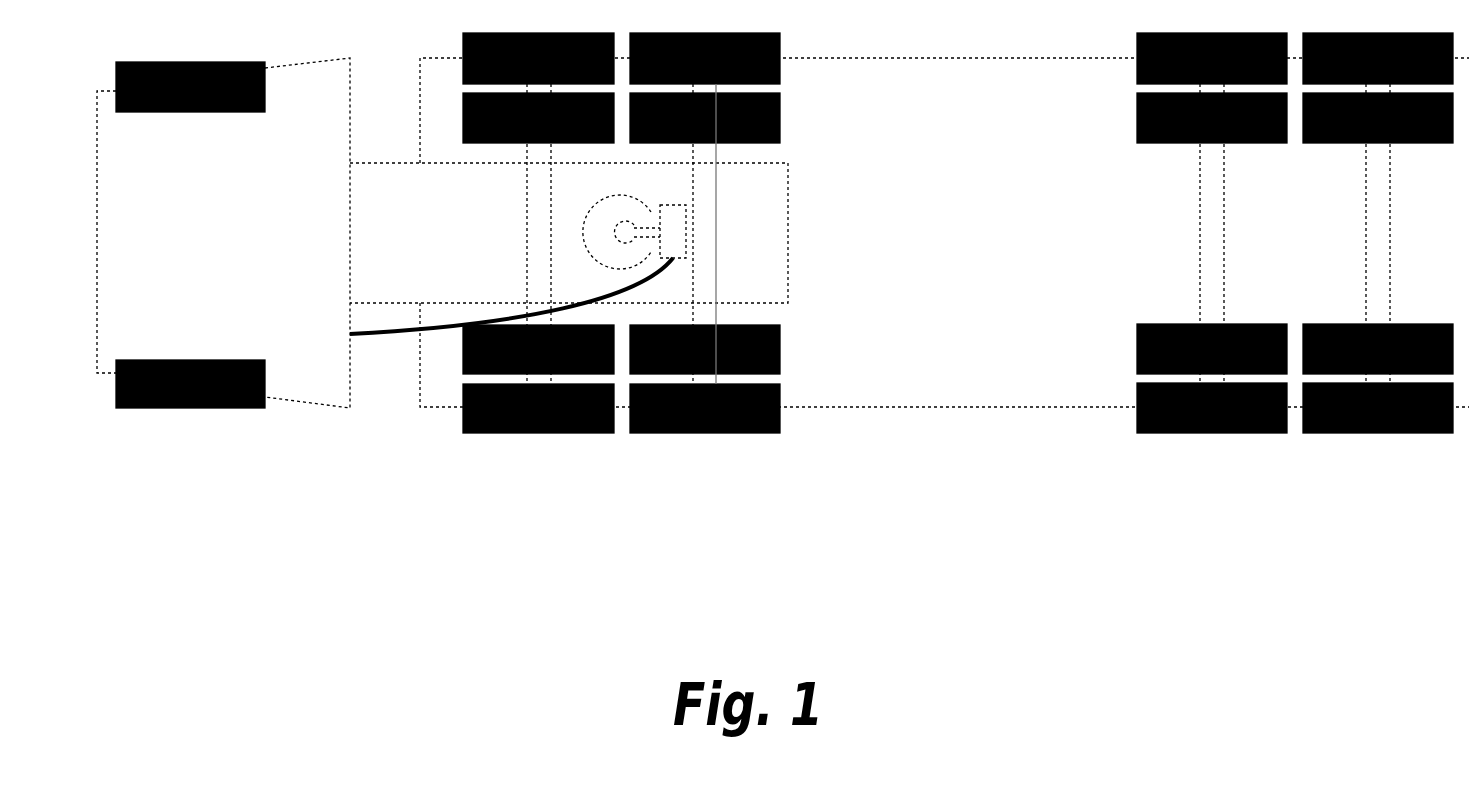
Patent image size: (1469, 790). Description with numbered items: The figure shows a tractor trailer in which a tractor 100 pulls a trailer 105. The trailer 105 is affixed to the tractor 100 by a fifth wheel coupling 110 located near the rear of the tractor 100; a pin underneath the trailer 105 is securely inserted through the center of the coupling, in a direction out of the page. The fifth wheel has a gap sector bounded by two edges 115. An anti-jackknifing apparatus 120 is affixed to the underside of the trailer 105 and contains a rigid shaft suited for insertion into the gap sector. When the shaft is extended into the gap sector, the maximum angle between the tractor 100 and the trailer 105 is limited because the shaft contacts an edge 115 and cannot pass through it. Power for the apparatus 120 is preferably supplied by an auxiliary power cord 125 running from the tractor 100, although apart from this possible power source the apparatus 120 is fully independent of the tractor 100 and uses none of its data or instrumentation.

The tractor 100 is at (442, 233).
The trailer 105 is at (944, 233).
The fifth wheel coupling 110 is at (602, 232).
The edges of the gap sector 115 is at (643, 218).
The anti-jackknifing apparatus 120 is at (680, 237).
The auxiliary power cord 125 is at (402, 338).